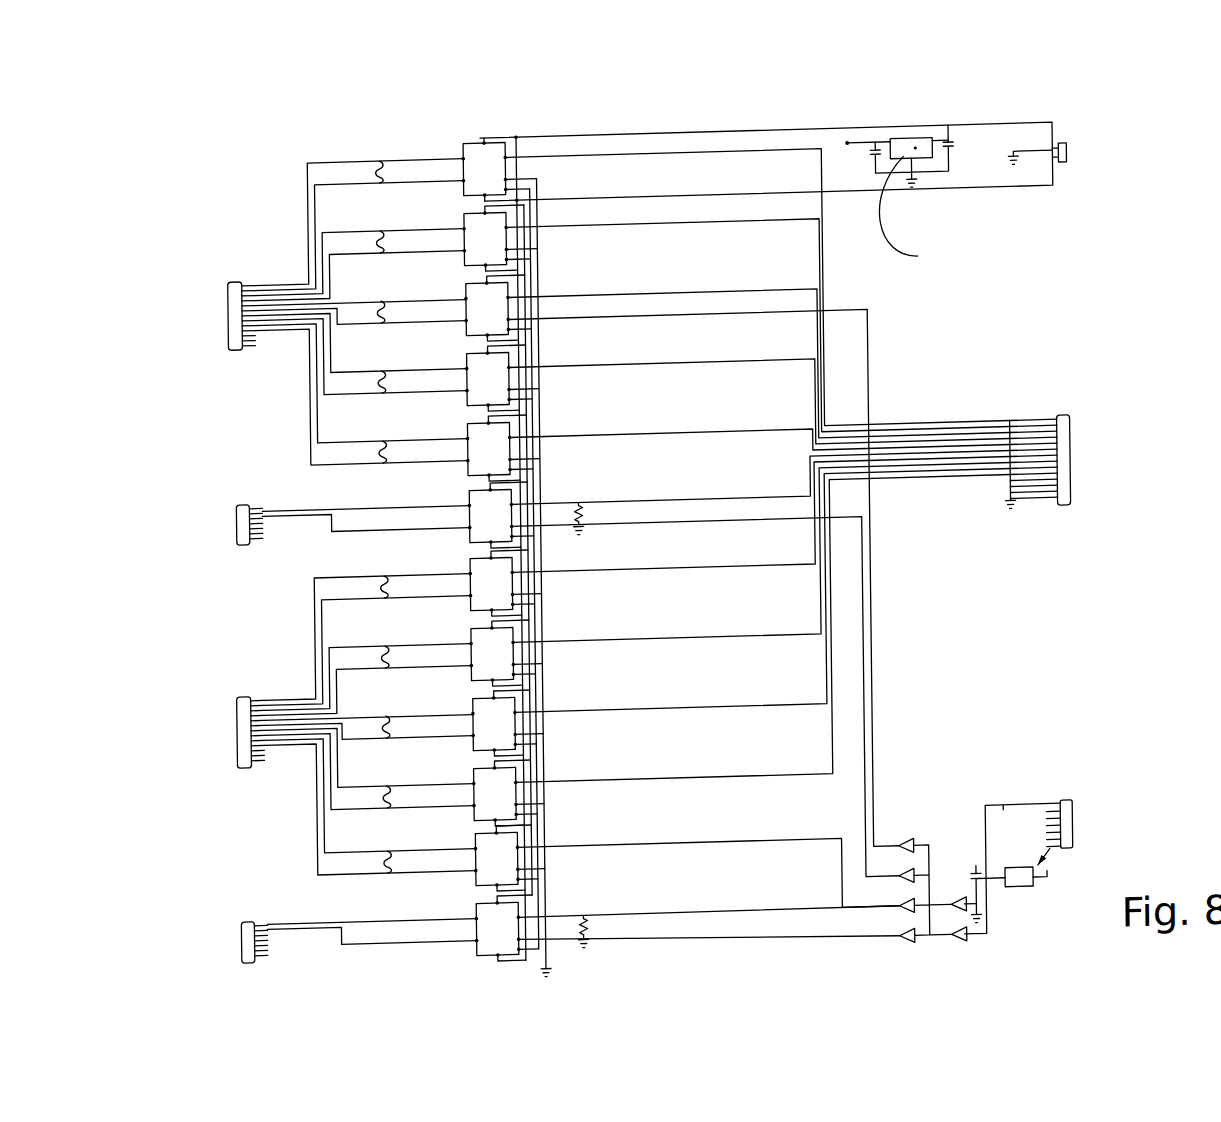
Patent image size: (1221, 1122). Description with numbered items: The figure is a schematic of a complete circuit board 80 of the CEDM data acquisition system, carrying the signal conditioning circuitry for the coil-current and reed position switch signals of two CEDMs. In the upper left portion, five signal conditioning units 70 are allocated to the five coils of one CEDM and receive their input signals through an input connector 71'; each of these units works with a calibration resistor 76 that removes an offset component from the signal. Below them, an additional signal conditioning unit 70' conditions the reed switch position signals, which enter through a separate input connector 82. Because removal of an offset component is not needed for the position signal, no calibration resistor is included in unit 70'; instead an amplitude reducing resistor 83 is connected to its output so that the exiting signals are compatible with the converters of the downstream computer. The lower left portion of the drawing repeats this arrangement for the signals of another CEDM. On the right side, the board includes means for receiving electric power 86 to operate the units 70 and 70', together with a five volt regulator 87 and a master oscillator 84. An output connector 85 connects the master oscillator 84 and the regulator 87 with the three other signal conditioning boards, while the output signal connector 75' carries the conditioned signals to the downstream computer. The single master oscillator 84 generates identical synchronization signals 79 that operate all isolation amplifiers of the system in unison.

The signal conditioning unit 70 is at (715, 517).
The signal conditioning unit 70' is at (718, 706).
The input connector 71' is at (217, 525).
The output signal connector 75' is at (1058, 461).
The calibration resistor 76 is at (384, 155).
The synchronization signals 79 is at (897, 851).
The circuit board 80 is at (280, 229).
The input connector 82 is at (237, 515).
The amplitude reducing resistor 83 is at (579, 502).
The master oscillator 84 is at (1018, 902).
The output connector 85 is at (1027, 807).
The means for receiving electric power 86 is at (1083, 165).
The 5 volt regulator 87 is at (962, 160).